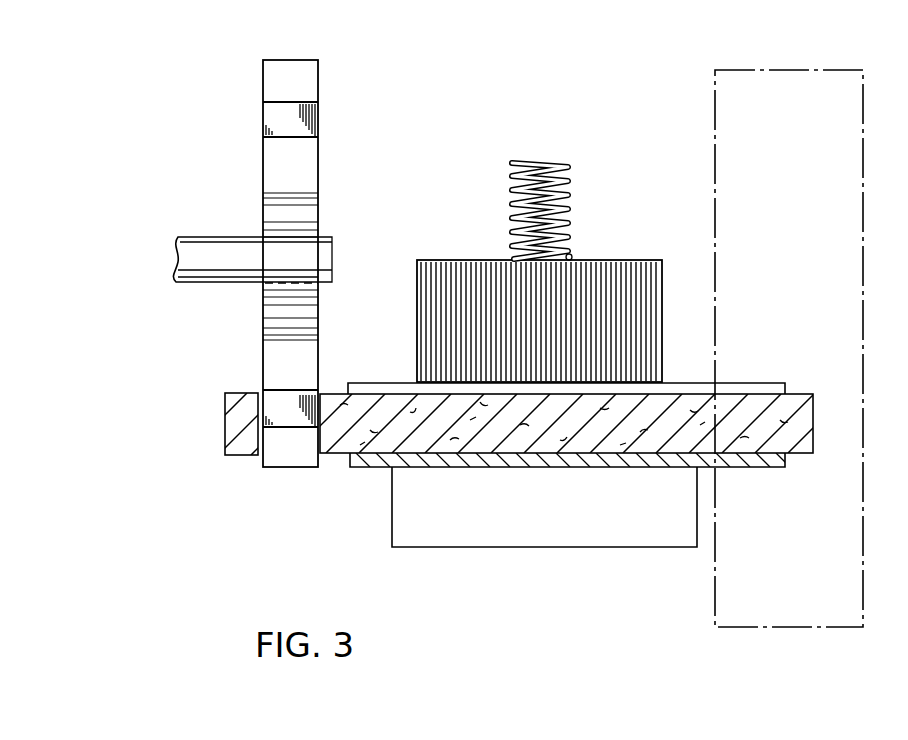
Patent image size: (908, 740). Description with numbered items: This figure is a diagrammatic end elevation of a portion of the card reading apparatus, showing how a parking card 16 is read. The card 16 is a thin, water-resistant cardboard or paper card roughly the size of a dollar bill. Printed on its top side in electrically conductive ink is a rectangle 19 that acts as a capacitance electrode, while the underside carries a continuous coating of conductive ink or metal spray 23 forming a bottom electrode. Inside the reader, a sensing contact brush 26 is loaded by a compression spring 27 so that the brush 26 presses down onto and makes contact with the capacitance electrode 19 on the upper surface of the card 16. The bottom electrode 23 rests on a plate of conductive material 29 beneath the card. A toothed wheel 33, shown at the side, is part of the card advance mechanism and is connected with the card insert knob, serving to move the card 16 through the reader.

The parking card 16 is at (793, 406).
The rectangle electrode 19 is at (374, 389).
The continuous conductive coating 23 is at (373, 467).
The sensing contact brush 26 is at (599, 272).
The compression spring 27 is at (566, 187).
The plate of conductive material 29 is at (512, 539).
The toothed wheel 33 is at (324, 121).